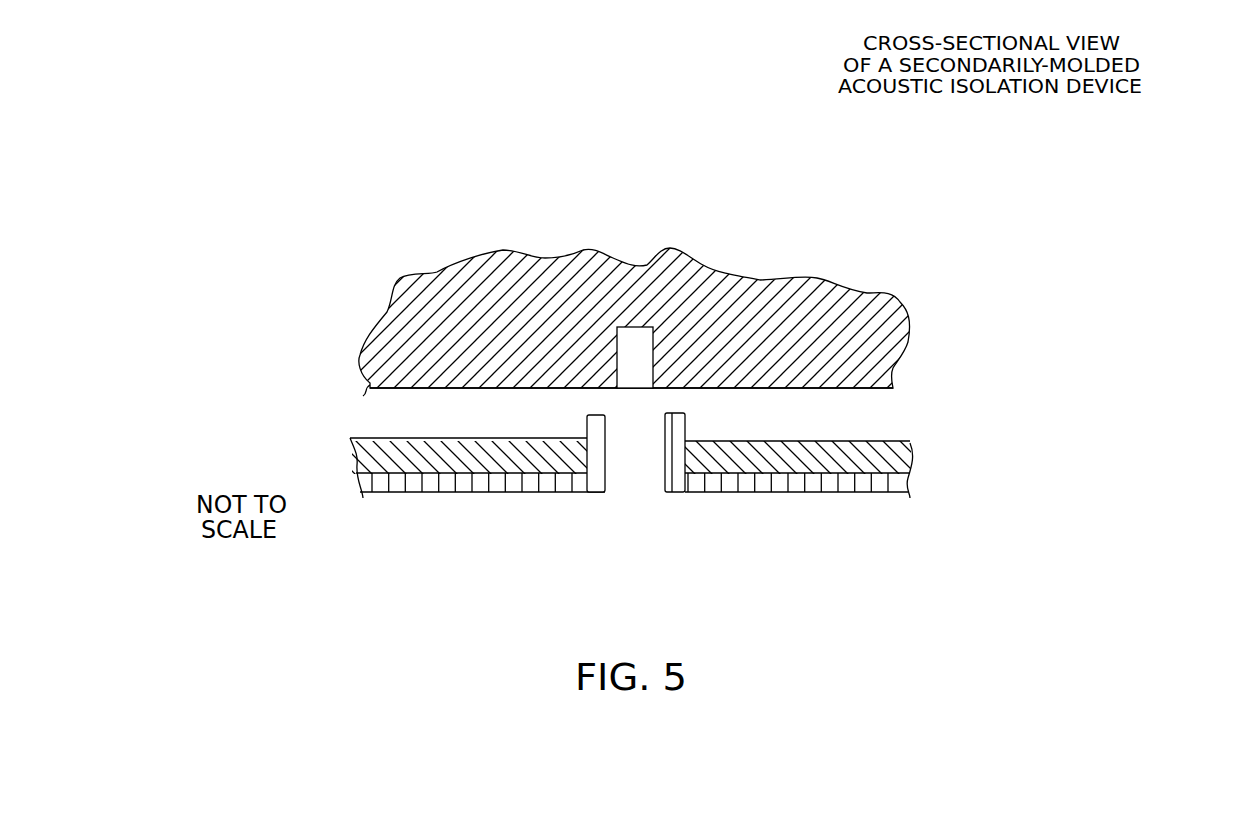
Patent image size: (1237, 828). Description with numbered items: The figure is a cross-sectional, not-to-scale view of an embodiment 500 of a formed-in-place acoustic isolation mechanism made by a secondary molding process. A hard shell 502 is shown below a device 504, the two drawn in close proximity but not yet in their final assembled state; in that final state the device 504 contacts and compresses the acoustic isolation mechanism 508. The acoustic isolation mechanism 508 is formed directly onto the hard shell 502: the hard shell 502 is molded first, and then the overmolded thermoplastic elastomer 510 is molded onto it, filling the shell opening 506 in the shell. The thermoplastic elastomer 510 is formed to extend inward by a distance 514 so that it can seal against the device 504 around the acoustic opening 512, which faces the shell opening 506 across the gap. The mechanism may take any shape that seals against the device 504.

The embodiment 500 is at (884, 194).
The hard shell 502 is at (905, 442).
The device 504 is at (910, 340).
The shell opening 506 is at (688, 457).
The acoustic isolation mechanism 508 is at (685, 420).
The overmolded thermoplastic elastomer 510 is at (838, 492).
The acoustic opening 512 is at (638, 340).
The distance 514 is at (569, 473).